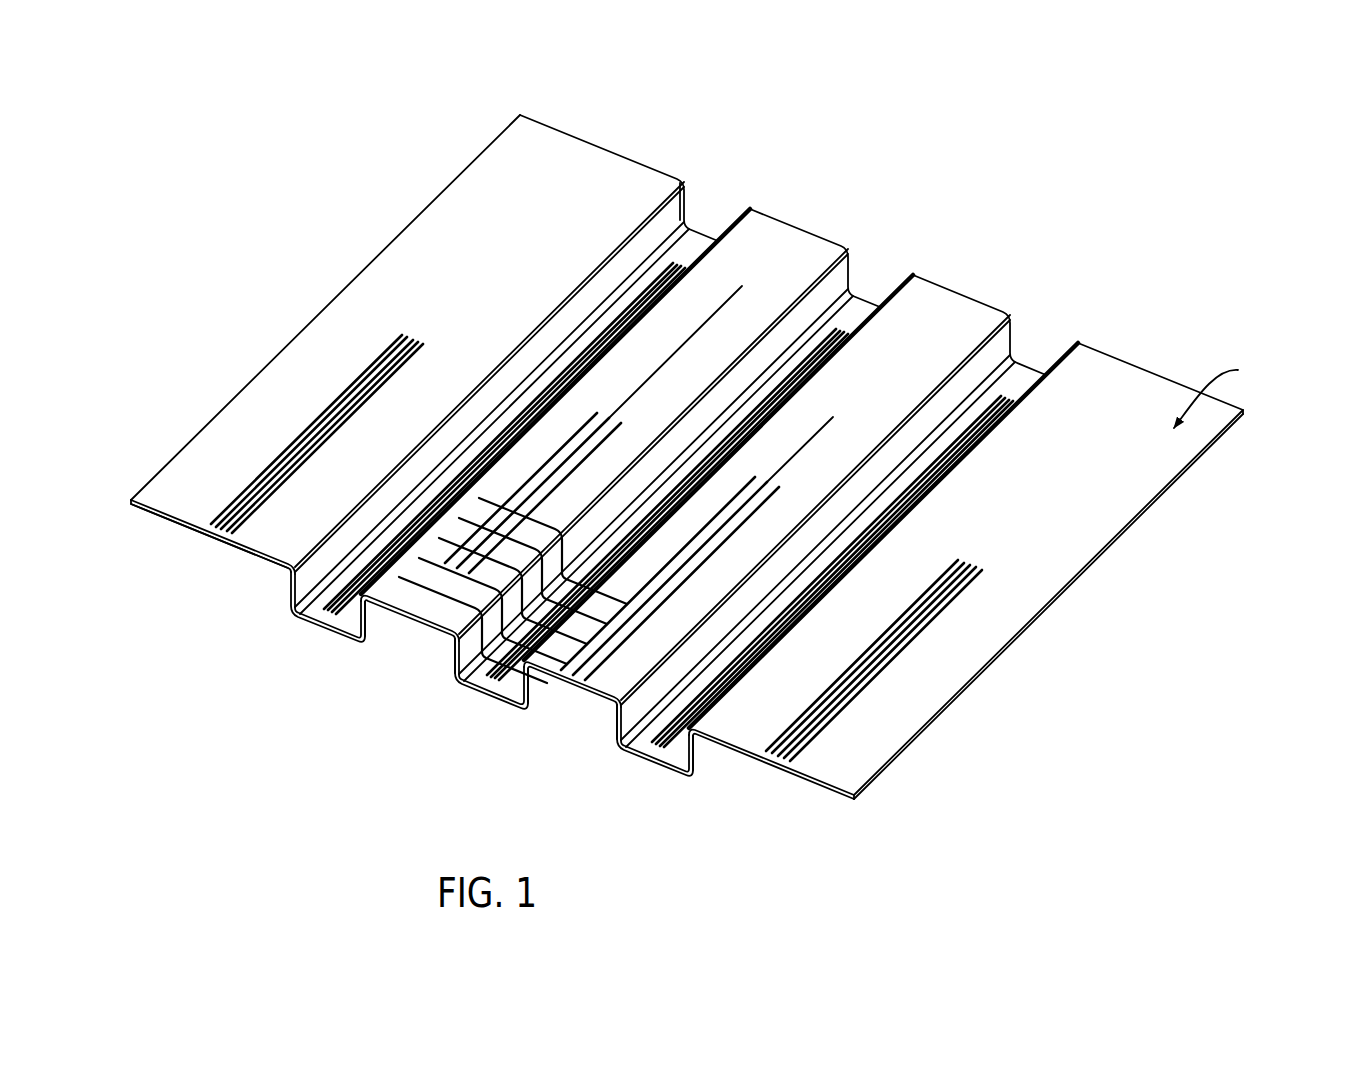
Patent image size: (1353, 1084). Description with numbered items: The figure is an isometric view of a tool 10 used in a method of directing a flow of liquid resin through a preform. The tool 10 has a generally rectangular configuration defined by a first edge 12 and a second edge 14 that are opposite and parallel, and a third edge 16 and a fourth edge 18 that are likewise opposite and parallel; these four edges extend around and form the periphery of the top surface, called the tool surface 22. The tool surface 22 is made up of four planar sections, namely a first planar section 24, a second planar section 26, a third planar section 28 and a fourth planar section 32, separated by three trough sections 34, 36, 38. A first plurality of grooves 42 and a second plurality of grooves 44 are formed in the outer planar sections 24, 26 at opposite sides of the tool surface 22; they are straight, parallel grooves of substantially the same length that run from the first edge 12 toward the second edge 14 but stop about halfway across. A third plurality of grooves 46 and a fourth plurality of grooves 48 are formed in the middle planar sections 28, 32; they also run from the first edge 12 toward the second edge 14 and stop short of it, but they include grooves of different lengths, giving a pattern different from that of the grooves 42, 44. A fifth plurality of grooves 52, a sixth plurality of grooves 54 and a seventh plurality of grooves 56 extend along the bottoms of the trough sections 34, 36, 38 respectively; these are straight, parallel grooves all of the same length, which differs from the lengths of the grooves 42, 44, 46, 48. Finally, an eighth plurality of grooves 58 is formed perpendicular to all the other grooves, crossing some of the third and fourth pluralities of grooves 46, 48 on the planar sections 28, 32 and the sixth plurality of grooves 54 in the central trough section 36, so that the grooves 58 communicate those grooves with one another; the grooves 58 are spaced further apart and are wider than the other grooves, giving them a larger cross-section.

The tool 10 is at (698, 461).
The first edge 12 is at (815, 789).
The second edge 14 is at (977, 561).
The third edge 16 is at (323, 310).
The fourth edge 18 is at (1067, 596).
The tool surface 22 is at (1220, 393).
The first planar section 24 is at (424, 333).
The second planar section 26 is at (1143, 469).
The third planar section 28 is at (602, 426).
The fourth planar section 32 is at (768, 492).
The first trough section 34 is at (503, 417).
The second trough section 36 is at (638, 482).
The third trough section 38 is at (832, 548).
The first plurality of grooves 42 is at (201, 538).
The second plurality of grooves 44 is at (765, 762).
The third plurality of grooves 46 is at (405, 618).
The fourth plurality of grooves 48 is at (569, 678).
The fifth plurality of grooves 52 is at (316, 629).
The sixth plurality of grooves 54 is at (480, 692).
The seventh plurality of grooves 56 is at (646, 763).
The eighth plurality of grooves 58 is at (457, 606).